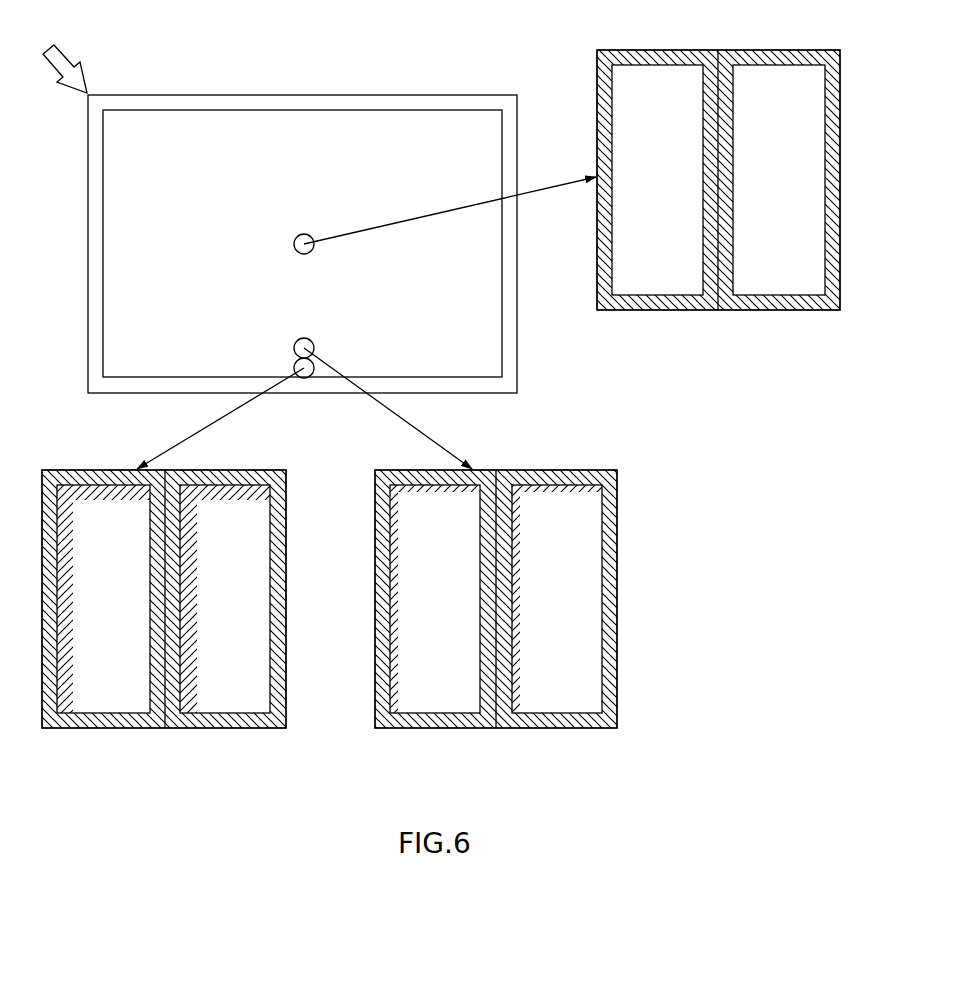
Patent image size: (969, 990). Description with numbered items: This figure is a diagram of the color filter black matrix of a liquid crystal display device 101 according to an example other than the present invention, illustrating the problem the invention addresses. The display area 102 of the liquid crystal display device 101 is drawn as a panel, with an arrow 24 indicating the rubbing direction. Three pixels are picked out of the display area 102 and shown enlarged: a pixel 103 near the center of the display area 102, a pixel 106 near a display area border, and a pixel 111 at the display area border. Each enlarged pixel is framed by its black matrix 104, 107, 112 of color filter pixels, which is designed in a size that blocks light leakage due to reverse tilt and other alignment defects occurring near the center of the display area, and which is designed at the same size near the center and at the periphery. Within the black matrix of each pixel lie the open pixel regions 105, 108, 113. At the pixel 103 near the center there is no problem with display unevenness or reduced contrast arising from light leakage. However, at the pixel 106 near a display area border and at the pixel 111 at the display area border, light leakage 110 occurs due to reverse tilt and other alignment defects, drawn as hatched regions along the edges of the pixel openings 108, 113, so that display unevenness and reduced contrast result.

The arrow 24 is at (70, 60).
The liquid crystal display device 101 is at (158, 94).
The display area 102 is at (386, 110).
The pixel near the center of the display area 103 is at (840, 83).
The black matrix 104 is at (838, 148).
The cell chamber 105 is at (812, 245).
The pixel near a display area border 106 is at (618, 486).
The black matrix 107 is at (616, 556).
The cell chamber 108 is at (593, 648).
The light leakage 110 is at (186, 609).
The pixel at the display area border 111 is at (287, 486).
The black matrix 112 is at (285, 556).
The cell chamber 113 is at (262, 648).